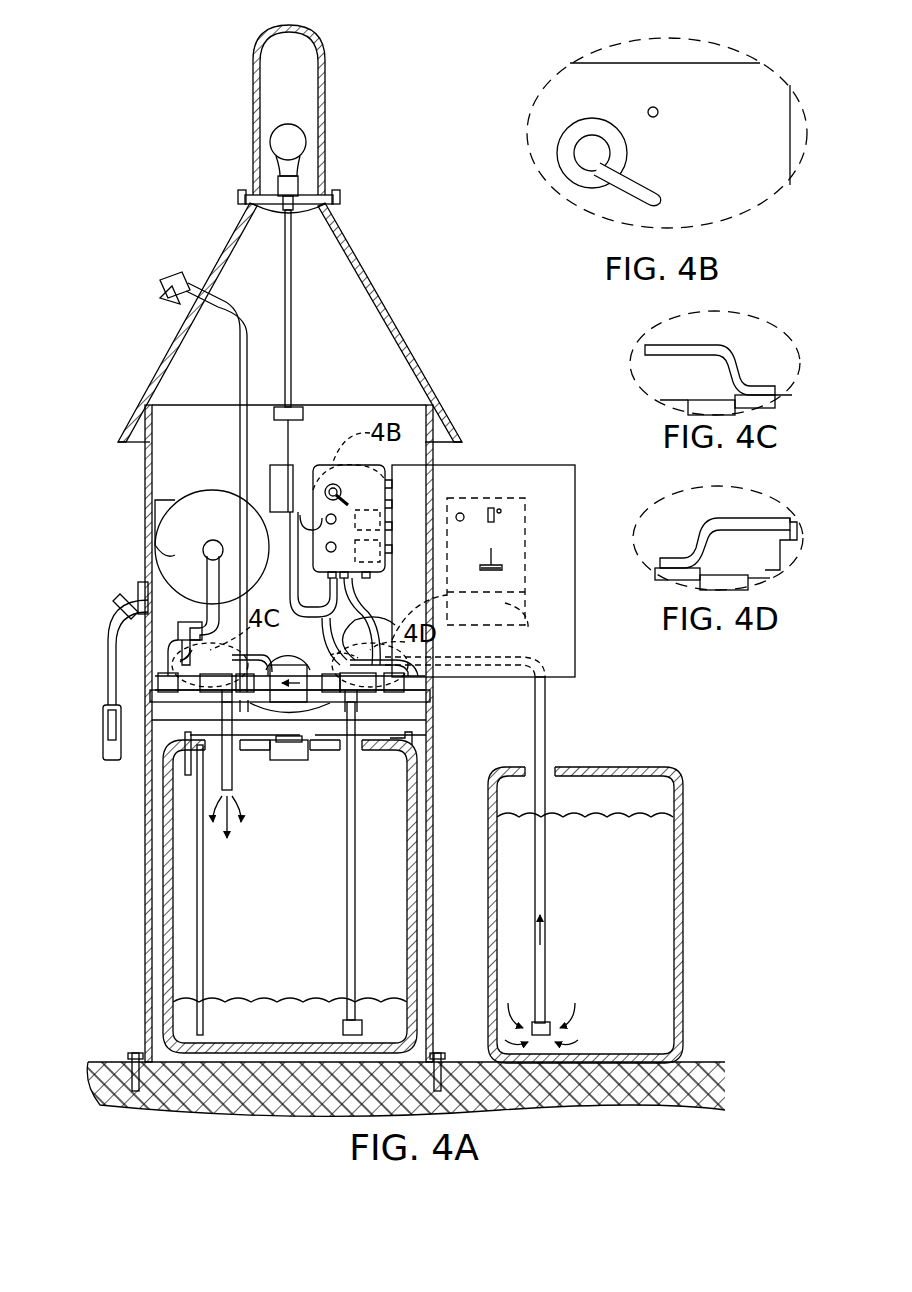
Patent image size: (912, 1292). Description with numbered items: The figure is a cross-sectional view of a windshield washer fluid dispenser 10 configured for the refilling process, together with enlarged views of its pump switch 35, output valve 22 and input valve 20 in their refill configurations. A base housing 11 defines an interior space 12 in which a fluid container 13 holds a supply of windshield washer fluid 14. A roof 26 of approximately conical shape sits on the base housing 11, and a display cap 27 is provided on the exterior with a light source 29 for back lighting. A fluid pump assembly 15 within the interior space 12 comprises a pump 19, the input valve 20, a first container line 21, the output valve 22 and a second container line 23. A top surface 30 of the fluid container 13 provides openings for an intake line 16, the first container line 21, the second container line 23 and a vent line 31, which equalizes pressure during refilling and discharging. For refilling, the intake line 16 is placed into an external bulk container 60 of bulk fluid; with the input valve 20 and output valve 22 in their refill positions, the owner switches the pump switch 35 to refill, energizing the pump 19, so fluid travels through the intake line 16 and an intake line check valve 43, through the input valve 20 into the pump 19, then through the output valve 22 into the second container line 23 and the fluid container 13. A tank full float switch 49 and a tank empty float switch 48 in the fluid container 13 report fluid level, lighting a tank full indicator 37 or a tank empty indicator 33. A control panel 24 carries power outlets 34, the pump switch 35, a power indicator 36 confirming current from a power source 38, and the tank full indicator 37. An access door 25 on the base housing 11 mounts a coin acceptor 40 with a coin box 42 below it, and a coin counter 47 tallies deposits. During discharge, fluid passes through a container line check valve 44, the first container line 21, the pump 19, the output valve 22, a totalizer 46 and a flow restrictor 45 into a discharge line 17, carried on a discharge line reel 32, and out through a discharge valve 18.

In FIG. 4A, the windshield washer fluid dispenser 10 is at (174, 187).
In FIG. 4A, the base housing 11 is at (433, 928).
In FIG. 4A, the interior space 12 is at (178, 478).
In FIG. 4A, the fluid container 13 is at (410, 880).
In FIG. 4A, the supply of windshield washer fluid 14 is at (390, 1025).
In FIG. 4A, the fluid pump assembly 15 is at (172, 680).
In FIG. 4A, the intake line 16 is at (545, 722).
In FIG. 4A, the discharge line 17 is at (108, 668).
In FIG. 4A, the discharge valve 18 is at (112, 764).
In FIG. 4A, the pump 19 is at (288, 670).
In FIG. 4A, the input valve 20 is at (358, 705).
In FIG. 4A, the first container line 21 is at (347, 872).
In FIG. 4A, the output valve 22 is at (225, 702).
In FIG. 4A, the second container line 23 is at (232, 786).
In FIG. 4A, the control panel 24 is at (385, 492).
In FIG. 4B, the control panel 24 is at (690, 80).
In FIG. 4A, the access door 25 is at (545, 482).
In FIG. 4A, the roof 26 is at (388, 302).
In FIG. 4A, the display cap 27 is at (325, 96).
In FIG. 4A, the light source 29 is at (290, 141).
In FIG. 4A, the top surface 30 is at (400, 738).
In FIG. 4A, the vent line 31 is at (178, 276).
In FIG. 4A, the discharge line reel 32 is at (178, 550).
In FIG. 4A, the tank empty indicator 33 is at (460, 513).
In FIG. 4A, the power outlets 34 is at (356, 598).
In FIG. 4A, the pump switch 35 is at (331, 490).
In FIG. 4B, the pump switch 35 is at (585, 150).
In FIG. 4A, the power indicator 36 is at (326, 521).
In FIG. 4A, the tank full indicator 37 is at (326, 548).
In FIG. 4A, the power source 38 is at (278, 486).
In FIG. 4A, the coin acceptor 40 is at (525, 536).
In FIG. 4A, the coin box 42 is at (530, 612).
In FIG. 4A, the intake line check valve 43 is at (550, 1030).
In FIG. 4A, the container line check valve 44 is at (385, 519).
In FIG. 4A, the flow restrictor 45 is at (186, 622).
In FIG. 4A, the totalizer 46 is at (150, 698).
In FIG. 4A, the coin counter 47 is at (385, 547).
In FIG. 4A, the tank empty float switch 48 is at (203, 940).
In FIG. 4A, the tank full float switch 49 is at (186, 760).
In FIG. 4A, the external bulk container 60 is at (683, 889).